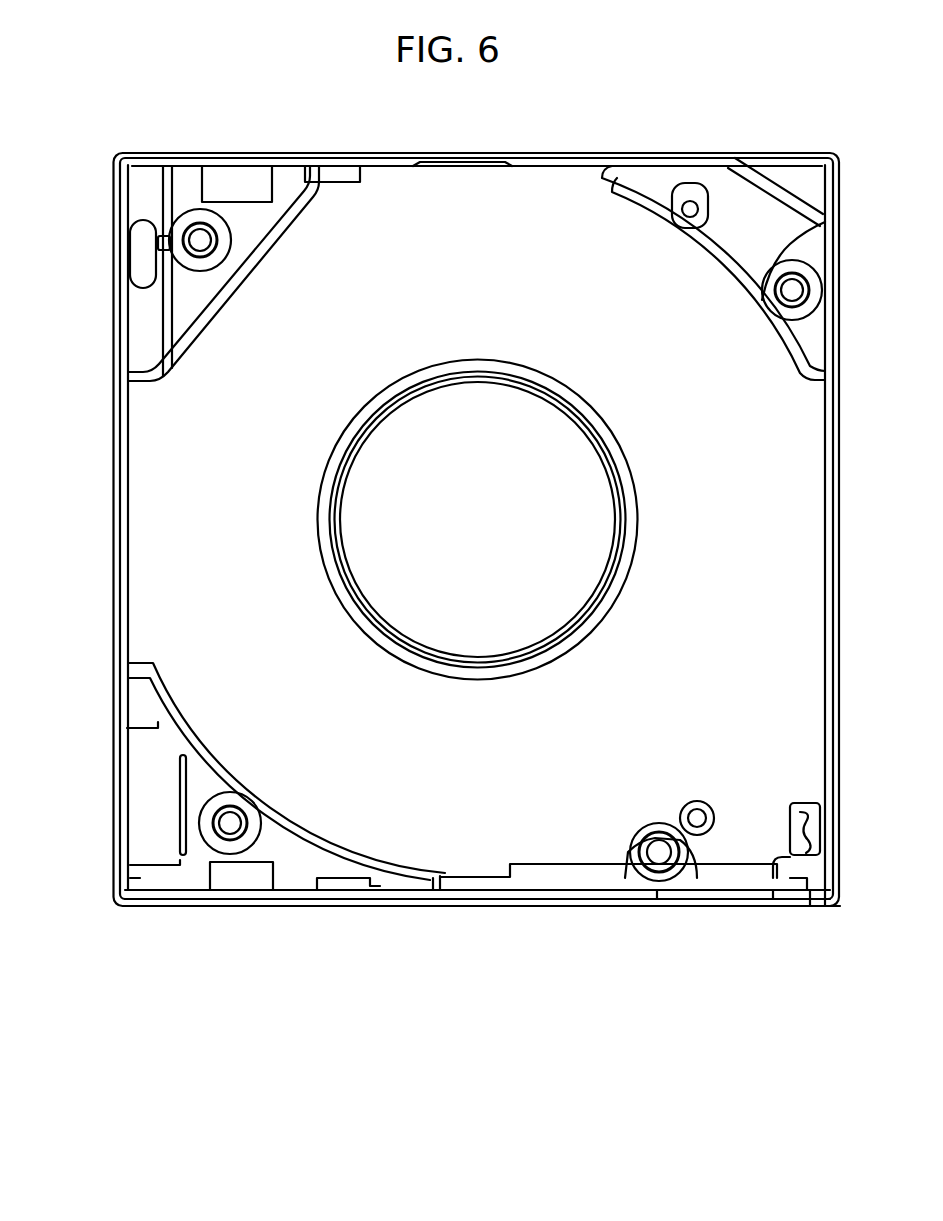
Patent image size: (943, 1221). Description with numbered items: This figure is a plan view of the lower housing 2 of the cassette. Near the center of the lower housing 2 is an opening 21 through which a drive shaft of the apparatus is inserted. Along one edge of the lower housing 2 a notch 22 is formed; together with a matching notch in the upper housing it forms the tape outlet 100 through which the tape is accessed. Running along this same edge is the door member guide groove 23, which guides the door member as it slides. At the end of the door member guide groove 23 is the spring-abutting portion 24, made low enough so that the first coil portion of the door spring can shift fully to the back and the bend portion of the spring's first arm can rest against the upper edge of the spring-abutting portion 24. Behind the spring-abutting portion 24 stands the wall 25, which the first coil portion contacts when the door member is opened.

The lower housing 2 is at (210, 141).
The opening 21 is at (407, 552).
The notch 22 is at (742, 892).
The door member guide groove 23 is at (577, 888).
The spring-abutting portion 24 is at (433, 890).
The wall 25 is at (358, 886).
The tape outlet 100 is at (727, 909).